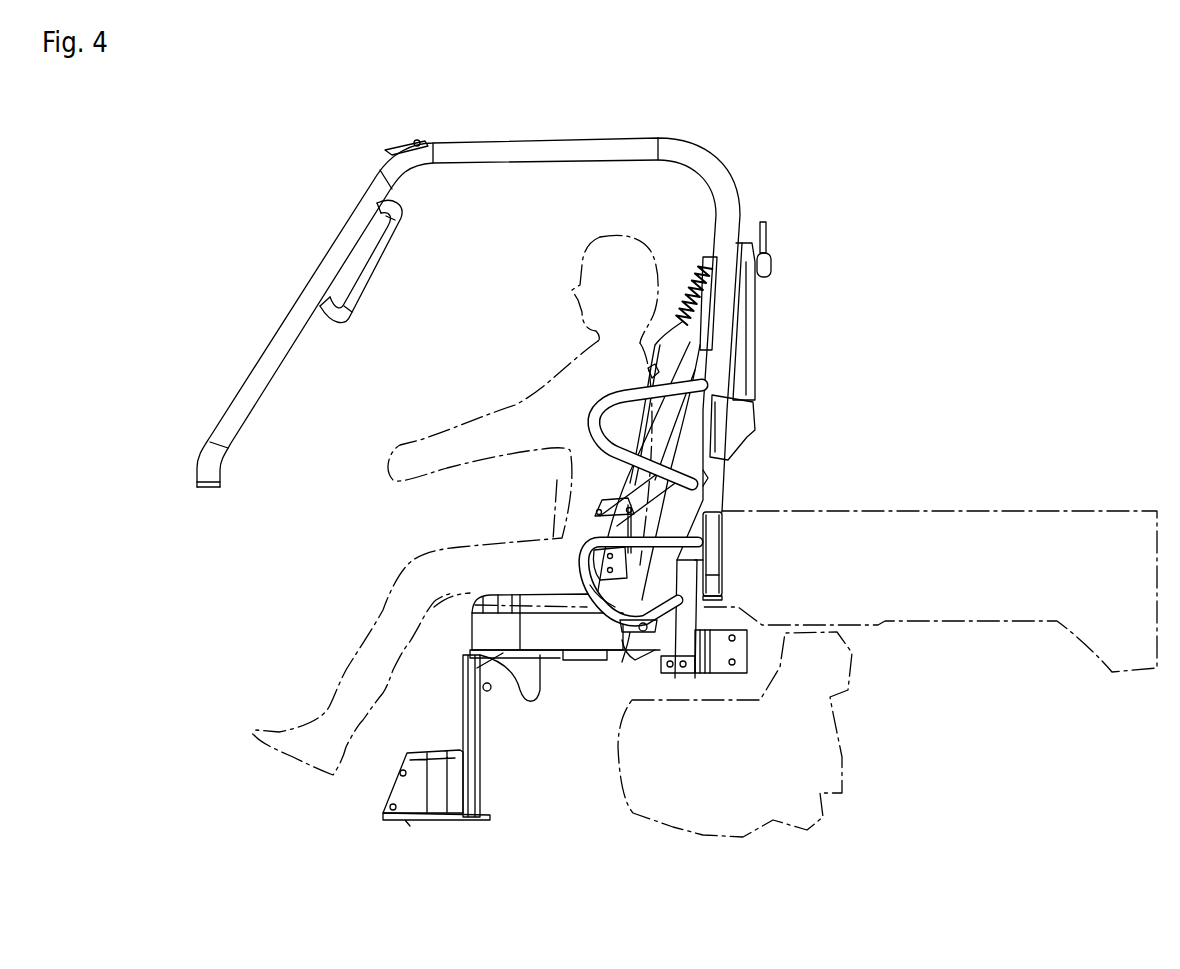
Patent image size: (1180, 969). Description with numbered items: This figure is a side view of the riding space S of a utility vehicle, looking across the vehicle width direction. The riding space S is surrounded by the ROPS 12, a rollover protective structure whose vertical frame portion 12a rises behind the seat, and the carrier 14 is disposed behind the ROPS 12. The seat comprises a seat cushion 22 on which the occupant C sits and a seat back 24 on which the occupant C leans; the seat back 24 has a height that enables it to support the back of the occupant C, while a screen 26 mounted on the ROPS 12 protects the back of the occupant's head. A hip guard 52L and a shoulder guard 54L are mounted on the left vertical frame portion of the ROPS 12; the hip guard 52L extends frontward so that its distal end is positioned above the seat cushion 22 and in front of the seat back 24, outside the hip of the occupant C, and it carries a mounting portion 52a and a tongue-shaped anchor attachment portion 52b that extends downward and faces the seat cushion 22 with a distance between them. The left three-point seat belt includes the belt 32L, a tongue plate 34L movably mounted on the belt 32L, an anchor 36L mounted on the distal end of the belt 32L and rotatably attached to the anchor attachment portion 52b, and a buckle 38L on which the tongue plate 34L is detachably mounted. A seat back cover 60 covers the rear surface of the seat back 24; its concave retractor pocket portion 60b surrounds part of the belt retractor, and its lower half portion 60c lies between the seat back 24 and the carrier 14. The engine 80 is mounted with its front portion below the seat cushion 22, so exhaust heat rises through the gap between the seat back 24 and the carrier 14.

The ROPS 12 is at (274, 350).
The rear pillar of frame 12a is at (708, 475).
The carrier 14 is at (982, 511).
The seat cushion 22 is at (507, 596).
The seat back 24 is at (678, 455).
The screen 26 is at (753, 323).
The belt 32L is at (583, 580).
The tongue plate 34L is at (645, 371).
The anchor 36L is at (627, 640).
The buckle 38L is at (610, 503).
The hip guard 52L is at (590, 526).
The guard loop mounting plate 52a is at (600, 553).
The anchor attachment portion 52b is at (640, 634).
The shoulder guard 54L is at (594, 418).
The seat back cover 60 is at (722, 512).
The retractor pocket portion 60b is at (750, 418).
The lower half portion 60c is at (718, 577).
The engine 80 is at (738, 776).
The riding space S is at (468, 352).
The occupant C is at (621, 298).